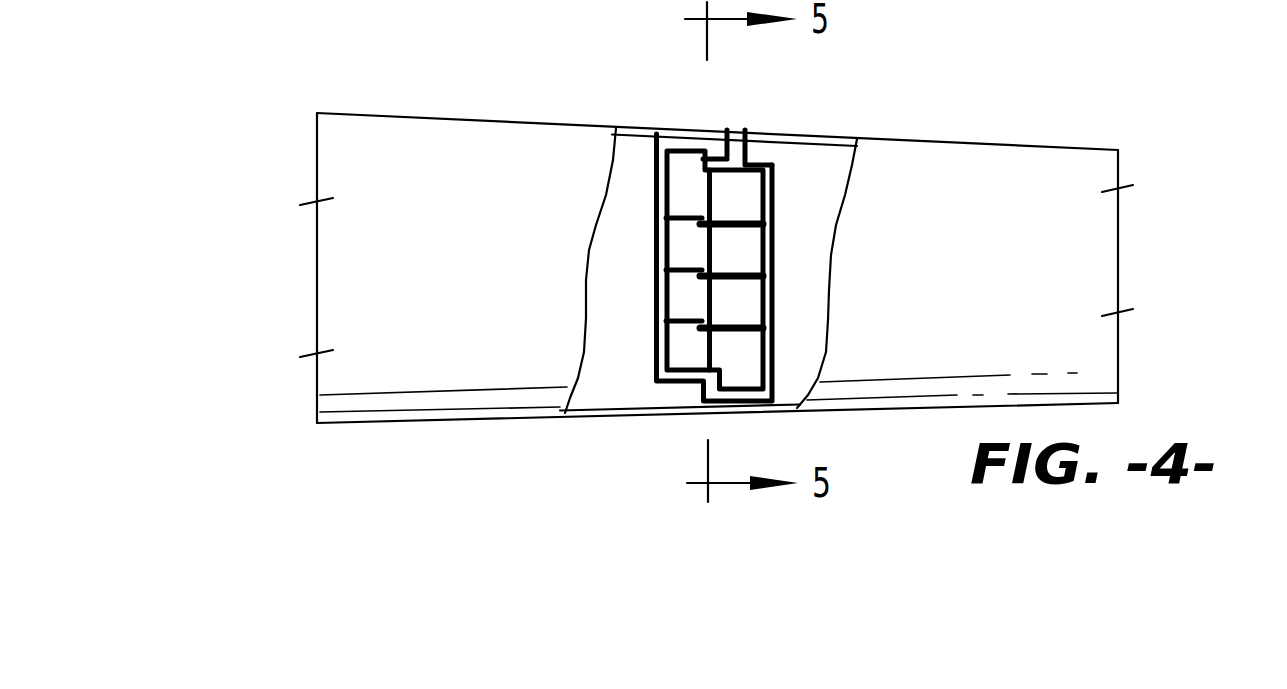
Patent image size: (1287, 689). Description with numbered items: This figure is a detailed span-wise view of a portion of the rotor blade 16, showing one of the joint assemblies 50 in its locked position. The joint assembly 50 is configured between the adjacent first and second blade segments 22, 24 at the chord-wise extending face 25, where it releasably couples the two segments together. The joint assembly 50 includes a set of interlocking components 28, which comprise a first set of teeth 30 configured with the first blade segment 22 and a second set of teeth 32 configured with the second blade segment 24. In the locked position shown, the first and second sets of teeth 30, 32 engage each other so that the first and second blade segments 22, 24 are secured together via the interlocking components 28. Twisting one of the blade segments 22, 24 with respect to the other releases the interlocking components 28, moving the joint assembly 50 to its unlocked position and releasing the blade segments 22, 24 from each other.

The rotor blade 16 is at (729, 212).
The first blade segment 22 is at (428, 118).
The second blade segment 24 is at (942, 142).
The chord-wise extending face 25 is at (705, 134).
The interlocking components 28 is at (700, 135).
The first set of teeth 30 is at (675, 128).
The second set of teeth 32 is at (745, 132).
The joint assembly 50 is at (797, 169).